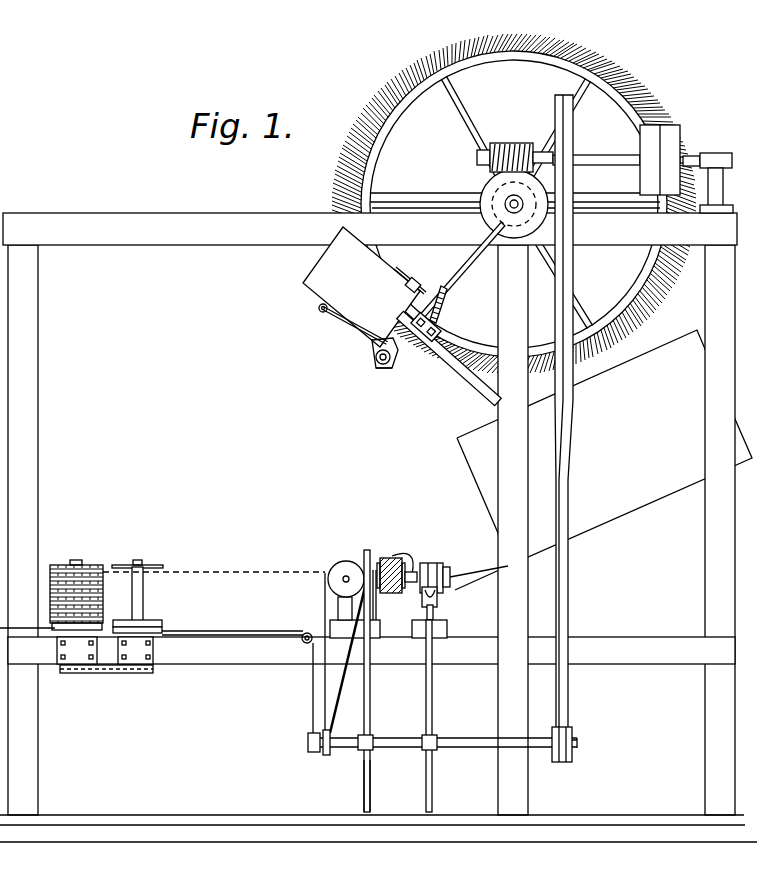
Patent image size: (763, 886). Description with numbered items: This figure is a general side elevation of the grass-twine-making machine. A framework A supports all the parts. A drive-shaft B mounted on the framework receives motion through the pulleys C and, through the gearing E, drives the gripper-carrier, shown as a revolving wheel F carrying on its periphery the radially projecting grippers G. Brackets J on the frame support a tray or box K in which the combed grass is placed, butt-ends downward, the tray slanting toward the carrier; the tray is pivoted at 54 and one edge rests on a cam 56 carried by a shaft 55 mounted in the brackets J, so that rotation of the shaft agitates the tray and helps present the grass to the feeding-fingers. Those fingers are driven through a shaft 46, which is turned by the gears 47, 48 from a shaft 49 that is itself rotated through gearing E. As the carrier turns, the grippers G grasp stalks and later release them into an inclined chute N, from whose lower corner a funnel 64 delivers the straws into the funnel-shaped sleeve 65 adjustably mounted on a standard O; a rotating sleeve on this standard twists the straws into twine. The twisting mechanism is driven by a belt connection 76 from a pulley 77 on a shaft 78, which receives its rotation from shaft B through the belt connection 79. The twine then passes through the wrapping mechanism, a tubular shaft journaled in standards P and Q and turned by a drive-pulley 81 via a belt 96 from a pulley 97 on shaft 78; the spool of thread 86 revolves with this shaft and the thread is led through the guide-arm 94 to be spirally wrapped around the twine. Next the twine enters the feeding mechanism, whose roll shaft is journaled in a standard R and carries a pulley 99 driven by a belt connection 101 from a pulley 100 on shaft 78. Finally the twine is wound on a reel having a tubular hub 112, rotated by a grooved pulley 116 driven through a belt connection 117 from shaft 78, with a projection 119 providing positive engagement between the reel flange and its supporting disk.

The framework A is at (713, 525).
The shaft B is at (603, 157).
The pulleys C is at (642, 172).
The gearing E is at (512, 143).
The revolving wheel F is at (429, 88).
The grippers G is at (392, 72).
The brackets J is at (507, 197).
The tray or box K is at (327, 272).
The chute N is at (622, 500).
The standard O is at (437, 608).
The standard P is at (343, 598).
The standard Q is at (377, 610).
The standard R is at (338, 613).
The shaft 46 is at (417, 287).
The gear 47 is at (443, 288).
The gear 48 is at (440, 325).
The shaft 49 is at (467, 272).
The pivot 54 is at (323, 312).
The shaft 55 is at (375, 362).
The cam 56 is at (390, 368).
The funnel 64 is at (487, 547).
The funnel-shaped sleeve 65 is at (440, 563).
The belt connection 76 is at (432, 673).
The pulley 77 is at (433, 720).
The shaft 78 is at (442, 759).
The belt connection 79 is at (568, 458).
The drive-pulley 81 is at (370, 672).
The spool of thread 86 is at (393, 553).
The arm 94 is at (408, 547).
The belt 96 is at (370, 672).
The pulley 97 is at (363, 765).
The pulley 99 is at (343, 563).
The pulley 100 is at (322, 753).
The belt connection 101 is at (340, 700).
The tubular hub 112 is at (138, 605).
The grooved pulley 116 is at (160, 623).
The belt connection 117 is at (217, 632).
The projection 119 is at (93, 565).